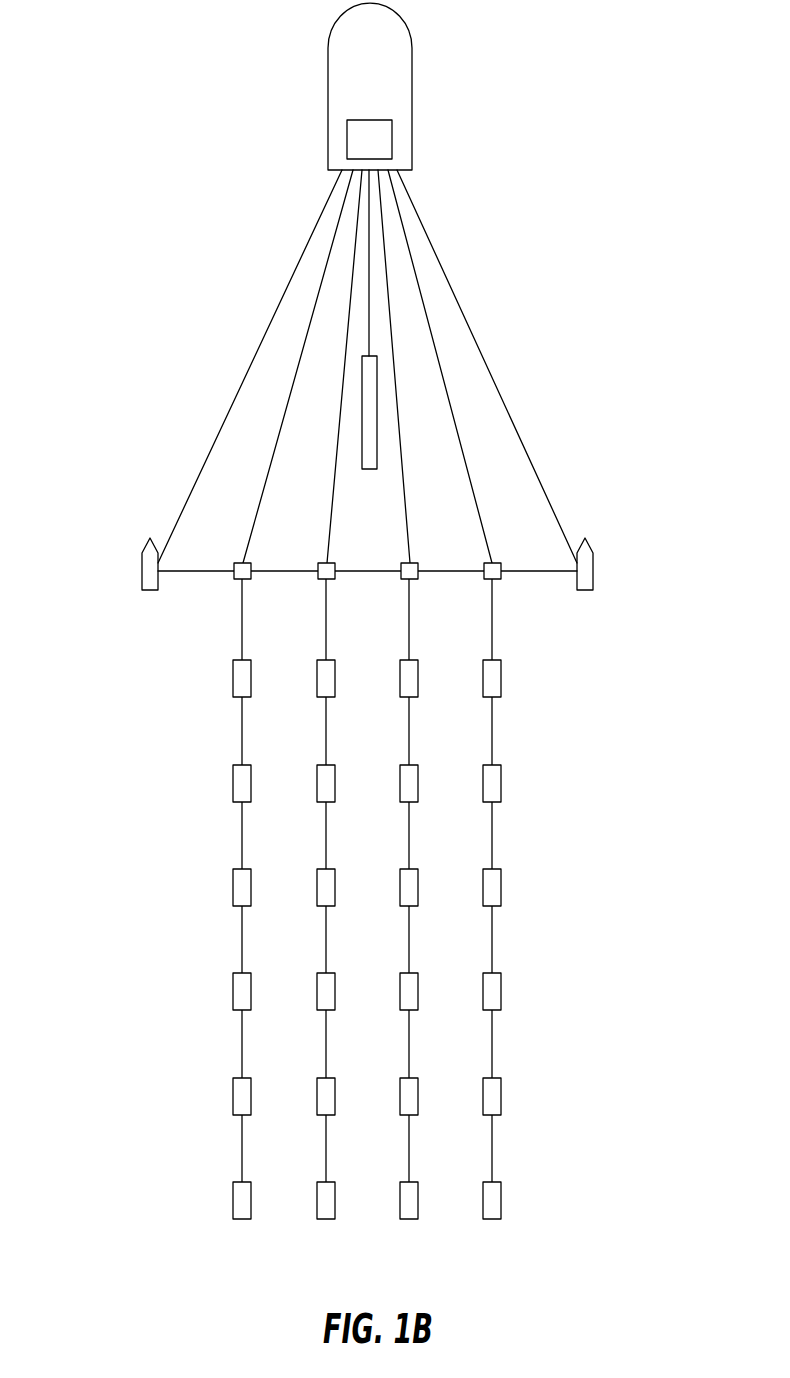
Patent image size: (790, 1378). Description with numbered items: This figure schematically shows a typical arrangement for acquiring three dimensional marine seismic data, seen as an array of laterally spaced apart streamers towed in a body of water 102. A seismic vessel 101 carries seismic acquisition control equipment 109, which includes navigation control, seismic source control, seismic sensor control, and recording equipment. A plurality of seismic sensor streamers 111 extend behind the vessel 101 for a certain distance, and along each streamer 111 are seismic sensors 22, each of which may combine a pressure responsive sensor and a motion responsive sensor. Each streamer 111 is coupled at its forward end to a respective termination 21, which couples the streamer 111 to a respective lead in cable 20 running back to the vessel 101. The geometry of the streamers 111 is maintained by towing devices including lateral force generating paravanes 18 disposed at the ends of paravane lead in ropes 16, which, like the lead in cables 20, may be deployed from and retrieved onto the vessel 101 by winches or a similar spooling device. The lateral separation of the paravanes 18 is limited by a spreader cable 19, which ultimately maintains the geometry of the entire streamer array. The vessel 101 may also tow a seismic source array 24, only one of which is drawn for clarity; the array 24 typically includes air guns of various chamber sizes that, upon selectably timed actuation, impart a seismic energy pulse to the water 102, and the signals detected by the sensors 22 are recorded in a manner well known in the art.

The seismic vessel 101 is at (412, 42).
The seismic acquisition control equipment 109 is at (385, 142).
The body of water 102 is at (617, 140).
The paravane lead in rope 16 is at (245, 398).
The paravane 18 is at (142, 570).
The spreader cable 19 is at (538, 571).
The lead in cable 20 is at (258, 508).
The termination 21 is at (234, 566).
The seismic sensor 22 is at (233, 680).
The seismic source array 24 is at (377, 407).
The seismic sensor streamer 111 is at (326, 597).